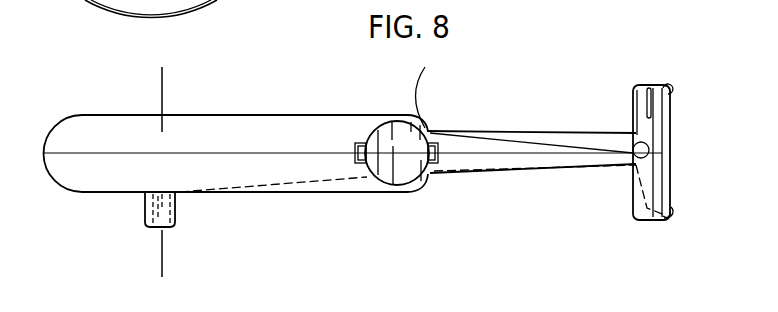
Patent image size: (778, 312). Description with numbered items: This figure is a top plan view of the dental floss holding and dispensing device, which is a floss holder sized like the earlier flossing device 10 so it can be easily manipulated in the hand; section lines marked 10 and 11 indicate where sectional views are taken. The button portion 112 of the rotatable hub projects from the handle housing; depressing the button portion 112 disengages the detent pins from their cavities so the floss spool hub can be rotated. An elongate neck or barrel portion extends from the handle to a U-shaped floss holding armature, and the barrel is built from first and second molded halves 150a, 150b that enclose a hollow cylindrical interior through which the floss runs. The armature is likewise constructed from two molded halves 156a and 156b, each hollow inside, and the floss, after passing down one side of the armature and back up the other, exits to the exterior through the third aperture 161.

The flossing device 10 is at (163, 78).
The section line 11- 11 is at (320, 154).
The button portion 112 is at (157, 227).
The first molded half of barrel portion 150a is at (572, 163).
The second molded half of barrel portion 150b is at (587, 140).
The first molded half of armature 156a is at (654, 214).
The second molded half of armature 156b is at (664, 86).
The third aperture 161 is at (642, 86).